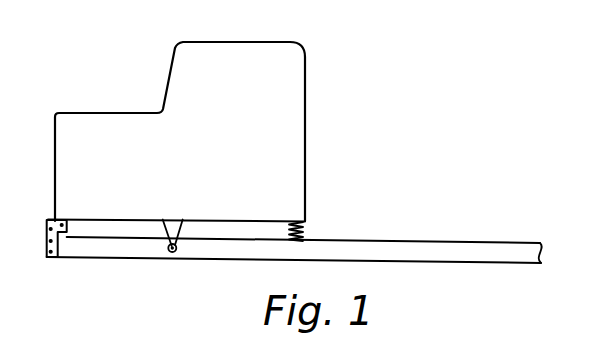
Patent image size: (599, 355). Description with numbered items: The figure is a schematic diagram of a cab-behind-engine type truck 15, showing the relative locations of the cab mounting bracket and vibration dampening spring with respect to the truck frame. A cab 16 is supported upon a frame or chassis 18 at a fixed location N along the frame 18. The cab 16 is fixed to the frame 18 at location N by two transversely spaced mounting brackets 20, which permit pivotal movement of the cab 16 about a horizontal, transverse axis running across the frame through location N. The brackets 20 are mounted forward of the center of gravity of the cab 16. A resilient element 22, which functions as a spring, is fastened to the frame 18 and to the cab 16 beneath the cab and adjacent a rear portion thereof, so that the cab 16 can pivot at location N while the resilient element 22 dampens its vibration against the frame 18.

The cab-behind-engine type truck 15 is at (204, 160).
The cab 16 is at (295, 117).
The frame 18 is at (440, 263).
The mounting bracket 20 is at (168, 230).
The resilient element 22 is at (306, 228).
The fixed location N is at (173, 252).